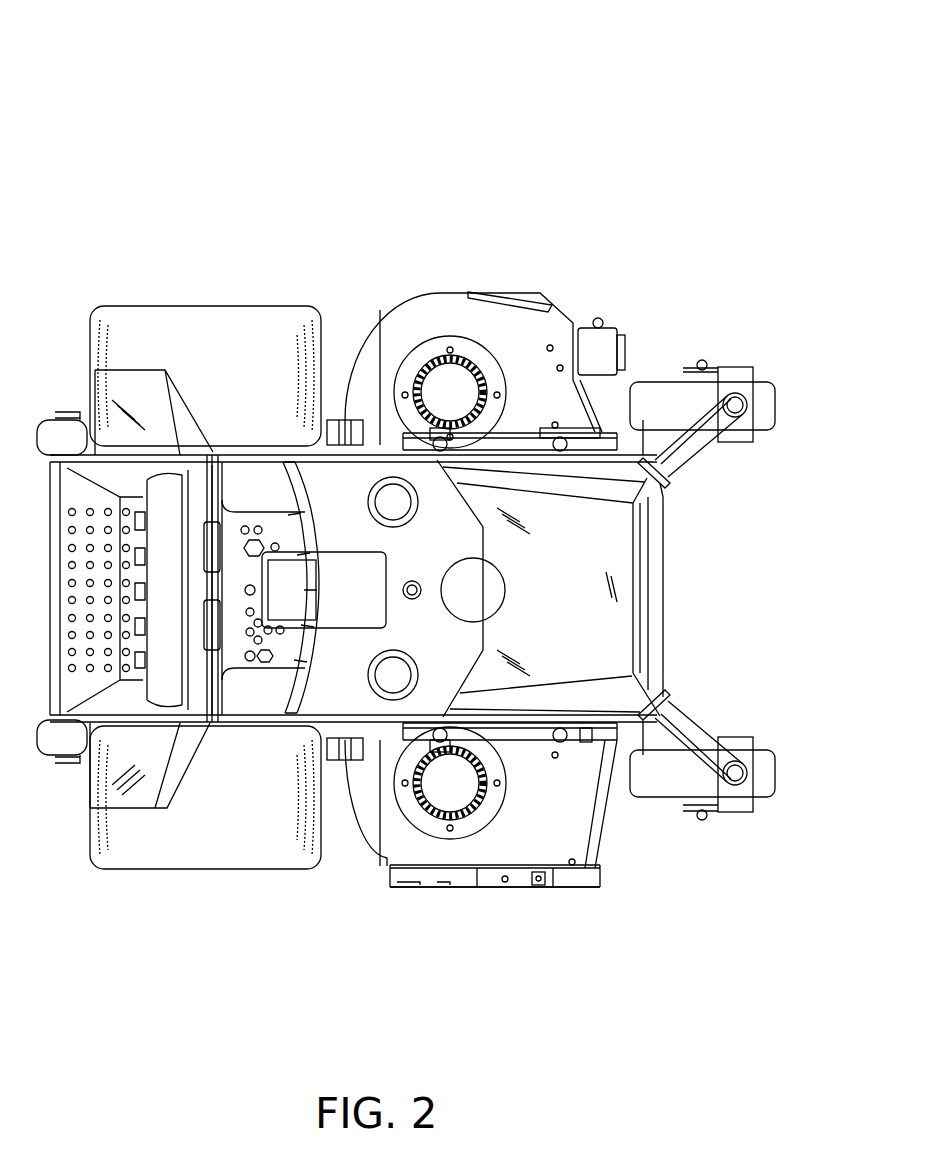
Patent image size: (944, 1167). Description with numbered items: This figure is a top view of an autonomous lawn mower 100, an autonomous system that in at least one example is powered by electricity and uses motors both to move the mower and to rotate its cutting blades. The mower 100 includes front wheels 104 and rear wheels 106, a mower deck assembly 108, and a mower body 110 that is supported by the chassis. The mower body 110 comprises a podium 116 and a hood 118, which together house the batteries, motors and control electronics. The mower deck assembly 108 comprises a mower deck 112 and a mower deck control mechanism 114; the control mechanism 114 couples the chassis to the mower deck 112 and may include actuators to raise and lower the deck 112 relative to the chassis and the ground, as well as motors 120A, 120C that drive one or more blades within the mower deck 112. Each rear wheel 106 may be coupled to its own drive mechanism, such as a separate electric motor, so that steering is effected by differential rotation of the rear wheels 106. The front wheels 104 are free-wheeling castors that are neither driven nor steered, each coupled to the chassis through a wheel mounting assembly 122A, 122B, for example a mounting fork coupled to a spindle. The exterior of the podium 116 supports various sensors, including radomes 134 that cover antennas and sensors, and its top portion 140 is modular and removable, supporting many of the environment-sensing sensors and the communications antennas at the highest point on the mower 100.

The autonomous lawn mower 100 is at (692, 110).
The front wheels 104 is at (767, 400).
The rear wheels 106 is at (157, 337).
The mower deck assembly 108 is at (552, 832).
The mower body 110 is at (678, 600).
The mower deck 112 is at (478, 852).
The mower deck control mechanism 114 is at (590, 747).
The podium 116 is at (344, 437).
The hood 118 is at (617, 532).
The motor 120A is at (448, 827).
The motor 120C is at (443, 352).
The wheel mounting assembly 122A is at (746, 718).
The wheel mounting assembly 122B is at (756, 460).
The radomes 134 is at (505, 544).
The top portion 140 is at (256, 470).